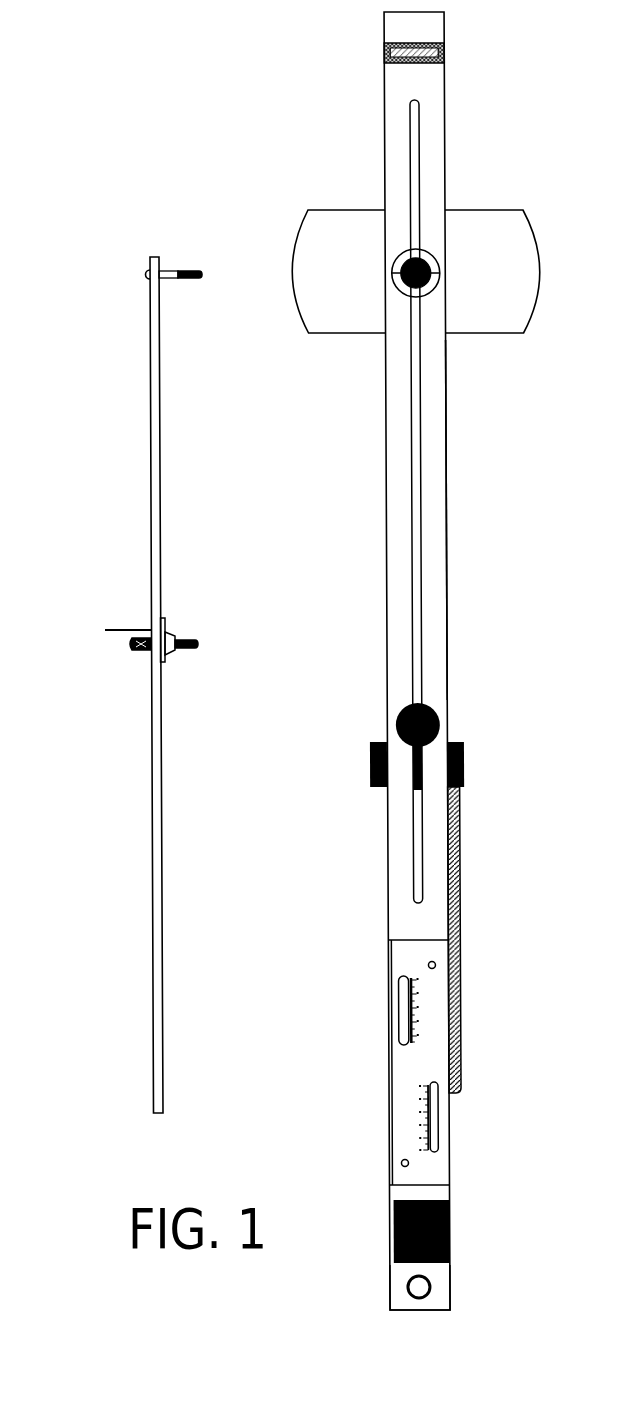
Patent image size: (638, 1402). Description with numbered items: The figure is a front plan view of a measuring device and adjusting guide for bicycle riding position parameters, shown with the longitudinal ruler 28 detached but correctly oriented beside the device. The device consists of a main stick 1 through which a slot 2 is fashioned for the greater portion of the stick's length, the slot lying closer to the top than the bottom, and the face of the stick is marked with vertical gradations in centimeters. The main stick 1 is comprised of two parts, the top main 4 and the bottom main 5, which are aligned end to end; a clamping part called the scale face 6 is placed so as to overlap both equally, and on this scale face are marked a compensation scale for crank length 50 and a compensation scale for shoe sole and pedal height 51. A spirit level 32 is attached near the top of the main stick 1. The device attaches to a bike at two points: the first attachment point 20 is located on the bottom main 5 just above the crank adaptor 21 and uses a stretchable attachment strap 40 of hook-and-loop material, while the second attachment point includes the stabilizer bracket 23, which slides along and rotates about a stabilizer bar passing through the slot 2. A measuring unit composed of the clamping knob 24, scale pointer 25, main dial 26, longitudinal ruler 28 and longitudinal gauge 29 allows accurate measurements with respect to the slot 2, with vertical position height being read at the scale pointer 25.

The main stick 1 is at (446, 645).
The slot 2 is at (415, 433).
The top main 4 is at (432, 502).
The bottom main 5 is at (438, 1297).
The scale face 6 is at (425, 1055).
The first attachment point 20 is at (450, 1222).
The crank adaptor 21 is at (407, 1285).
The stabilizer bracket 23 is at (370, 763).
The clamping knob 24 is at (403, 252).
The scale pointer 25 is at (430, 248).
The main dial 26 is at (503, 208).
The longitudinal ruler 28 is at (147, 478).
The longitudinal gauge 29 is at (180, 630).
The spirit level 32 is at (445, 45).
The stretchable attachment strap 40 is at (460, 833).
The compensation scale for crank length 50 is at (425, 1008).
The compensation scale for shoe sole/pedal height 51 is at (412, 1122).